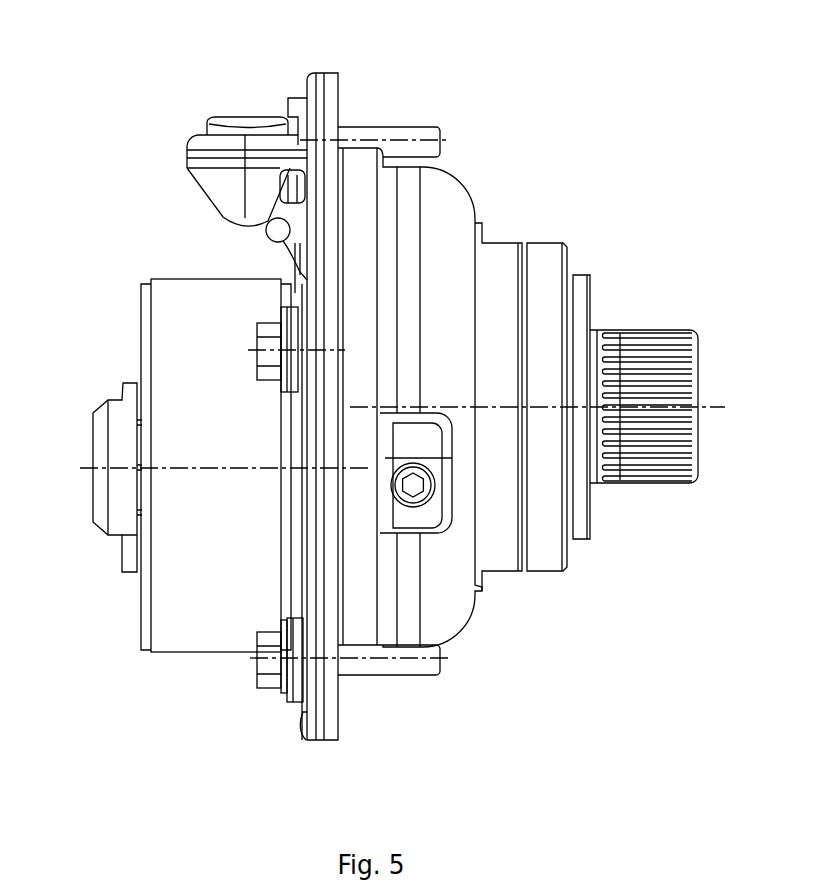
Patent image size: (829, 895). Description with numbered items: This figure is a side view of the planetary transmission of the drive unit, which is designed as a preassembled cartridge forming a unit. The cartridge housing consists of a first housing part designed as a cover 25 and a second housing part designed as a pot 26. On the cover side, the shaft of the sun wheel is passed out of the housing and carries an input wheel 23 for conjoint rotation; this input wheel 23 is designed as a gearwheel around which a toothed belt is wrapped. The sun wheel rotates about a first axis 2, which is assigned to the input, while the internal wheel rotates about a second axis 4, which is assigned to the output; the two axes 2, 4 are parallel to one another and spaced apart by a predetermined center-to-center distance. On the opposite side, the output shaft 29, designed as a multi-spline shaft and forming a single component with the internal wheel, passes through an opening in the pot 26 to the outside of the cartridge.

The first axis 2 is at (170, 468).
The second axis 4 is at (708, 407).
The input wheel 23 is at (216, 635).
The cover 25 is at (311, 89).
The pot 26 is at (443, 205).
The output shaft 29 is at (650, 470).